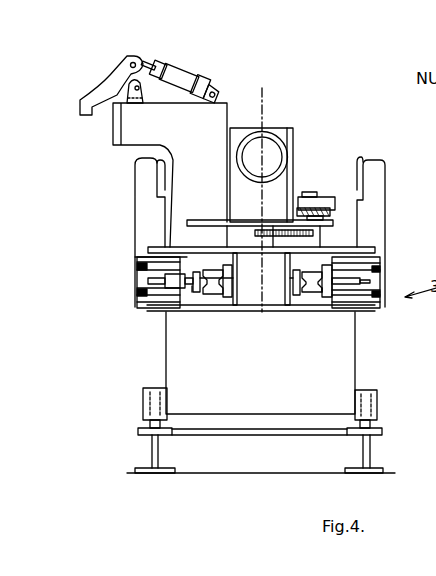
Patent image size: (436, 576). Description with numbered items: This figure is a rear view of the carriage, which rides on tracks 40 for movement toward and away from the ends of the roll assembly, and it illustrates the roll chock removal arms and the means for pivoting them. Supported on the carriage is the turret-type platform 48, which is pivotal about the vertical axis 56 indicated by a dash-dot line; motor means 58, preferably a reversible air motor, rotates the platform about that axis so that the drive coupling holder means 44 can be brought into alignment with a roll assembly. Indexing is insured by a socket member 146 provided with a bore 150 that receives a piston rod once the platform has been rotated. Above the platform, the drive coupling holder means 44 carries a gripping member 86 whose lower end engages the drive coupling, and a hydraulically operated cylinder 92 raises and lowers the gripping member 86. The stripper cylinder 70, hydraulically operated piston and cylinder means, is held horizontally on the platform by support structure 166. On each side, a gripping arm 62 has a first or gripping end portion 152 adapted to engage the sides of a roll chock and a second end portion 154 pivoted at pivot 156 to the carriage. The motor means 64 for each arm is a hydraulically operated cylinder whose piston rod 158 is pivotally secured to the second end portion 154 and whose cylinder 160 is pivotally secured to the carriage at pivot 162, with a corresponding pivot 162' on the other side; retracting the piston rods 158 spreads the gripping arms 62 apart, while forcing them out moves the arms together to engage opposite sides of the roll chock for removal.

The tracks 40 is at (143, 424).
The drive coupling holder means 44 is at (104, 136).
The turret-type platform 48 is at (333, 223).
The vertical axis 56 is at (264, 106).
The motor means 58 is at (320, 194).
The gripping arms 62 is at (142, 178).
The motor means 64 is at (193, 288).
The stripper cylinder 70 is at (276, 152).
The gripping member 86 is at (103, 92).
The hydraulically operated cylinder 92 is at (199, 70).
The socket member 146 is at (273, 228).
The bore 150 is at (308, 233).
The first or gripping end portion 152 is at (160, 170).
The second end portion 154 is at (137, 268).
The pivot 156 is at (172, 248).
The piston rod 158 is at (168, 278).
The cylinder 160 is at (327, 262).
The pivot 162 is at (301, 302).
The left coupling 162' is at (227, 302).
The support structure 166 is at (300, 124).